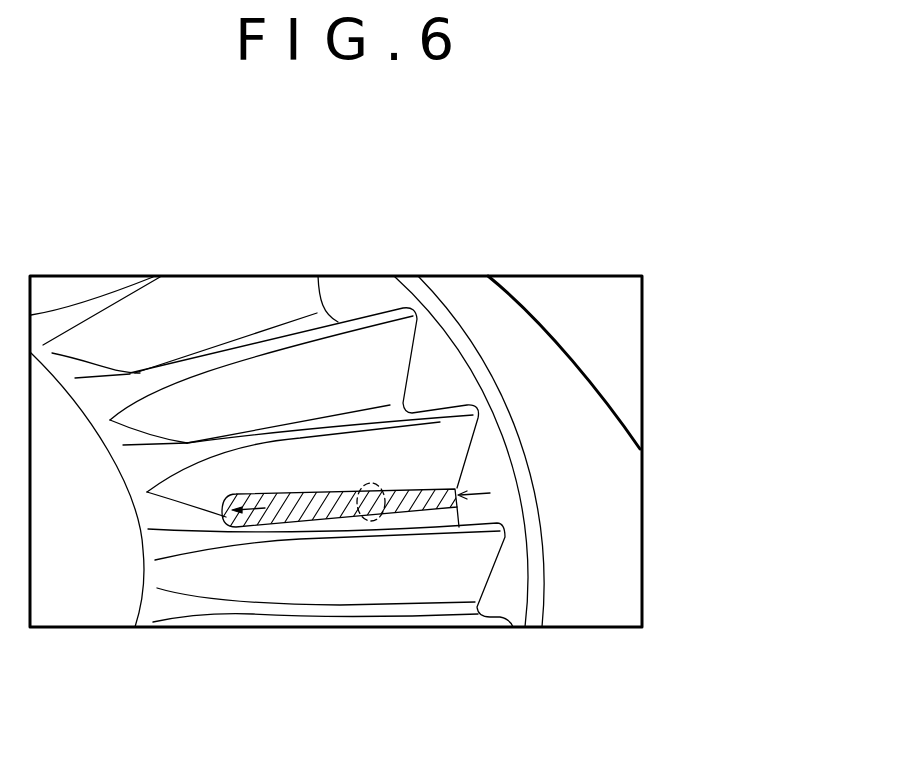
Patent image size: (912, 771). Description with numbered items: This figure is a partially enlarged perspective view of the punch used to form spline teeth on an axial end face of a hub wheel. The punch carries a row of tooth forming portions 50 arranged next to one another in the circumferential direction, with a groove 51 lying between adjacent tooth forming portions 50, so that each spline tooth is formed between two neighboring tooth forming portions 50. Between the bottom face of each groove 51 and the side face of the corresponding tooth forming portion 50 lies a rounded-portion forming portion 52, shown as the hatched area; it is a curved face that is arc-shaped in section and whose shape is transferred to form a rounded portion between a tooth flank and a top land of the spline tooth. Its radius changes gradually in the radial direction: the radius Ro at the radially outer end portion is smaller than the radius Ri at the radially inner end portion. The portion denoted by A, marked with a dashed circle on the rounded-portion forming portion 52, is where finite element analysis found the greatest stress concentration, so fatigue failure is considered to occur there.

The tooth forming portion 50 is at (377, 427).
The groove 51 is at (425, 513).
The rounded-portion forming portion 52 is at (303, 508).
The radius at radially inner end portion Ri is at (257, 512).
The radius at radially outer end portion Ro is at (490, 493).
The portion A is at (370, 522).